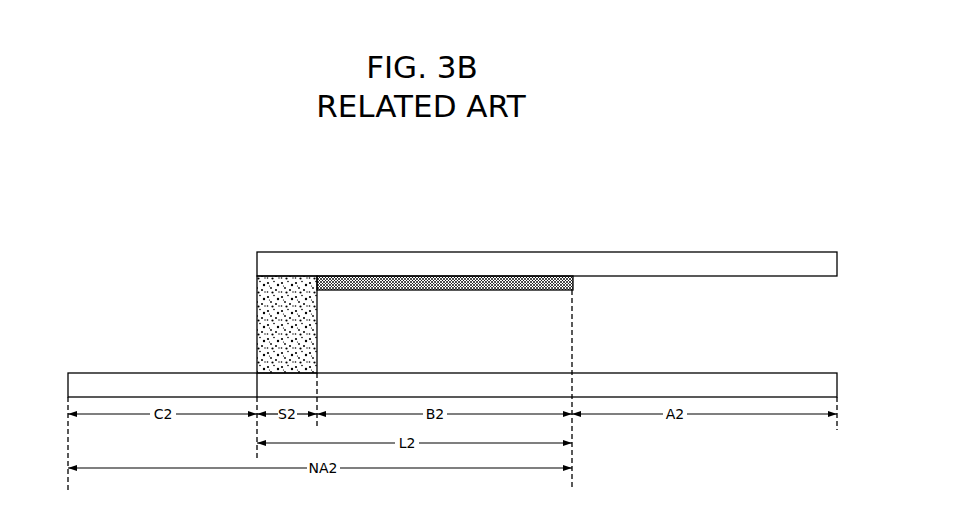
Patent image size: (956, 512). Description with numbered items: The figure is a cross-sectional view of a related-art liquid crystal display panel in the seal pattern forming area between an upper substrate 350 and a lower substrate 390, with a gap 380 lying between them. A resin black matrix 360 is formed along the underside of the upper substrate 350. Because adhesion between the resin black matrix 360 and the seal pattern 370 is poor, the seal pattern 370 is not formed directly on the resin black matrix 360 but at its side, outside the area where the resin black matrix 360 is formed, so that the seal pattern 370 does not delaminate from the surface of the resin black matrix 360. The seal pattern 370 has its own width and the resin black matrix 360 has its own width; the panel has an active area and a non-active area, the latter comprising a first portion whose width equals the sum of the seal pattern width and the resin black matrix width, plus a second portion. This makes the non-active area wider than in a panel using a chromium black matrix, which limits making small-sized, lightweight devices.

The upper substrate 350 is at (613, 263).
The resin black matrix 360 is at (479, 279).
The seal pattern 370 is at (267, 324).
The gap / cell region 380 is at (722, 309).
The lower substrate 390 is at (792, 380).